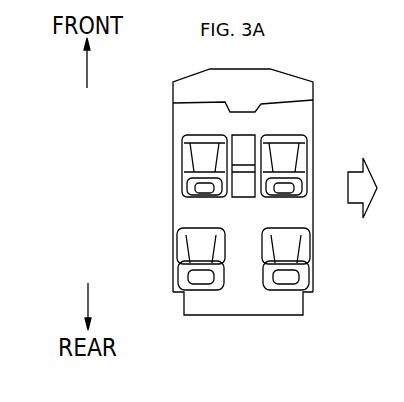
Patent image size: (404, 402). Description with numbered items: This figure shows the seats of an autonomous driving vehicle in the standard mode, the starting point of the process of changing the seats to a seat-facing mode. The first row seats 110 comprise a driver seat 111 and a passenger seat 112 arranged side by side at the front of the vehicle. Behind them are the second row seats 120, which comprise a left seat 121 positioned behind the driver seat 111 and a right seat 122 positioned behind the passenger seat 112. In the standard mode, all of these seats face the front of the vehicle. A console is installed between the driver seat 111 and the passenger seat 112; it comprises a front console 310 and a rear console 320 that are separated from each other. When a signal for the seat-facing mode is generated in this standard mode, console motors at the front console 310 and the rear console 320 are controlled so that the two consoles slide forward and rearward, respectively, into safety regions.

The first row seats 110 is at (169, 130).
The driver seat 111 is at (198, 156).
The passenger seat 112 is at (287, 153).
The second row seats 120 is at (203, 296).
The left seat 121 is at (197, 252).
The right seat 122 is at (290, 252).
The front console 310 is at (243, 135).
The rear console 320 is at (243, 195).